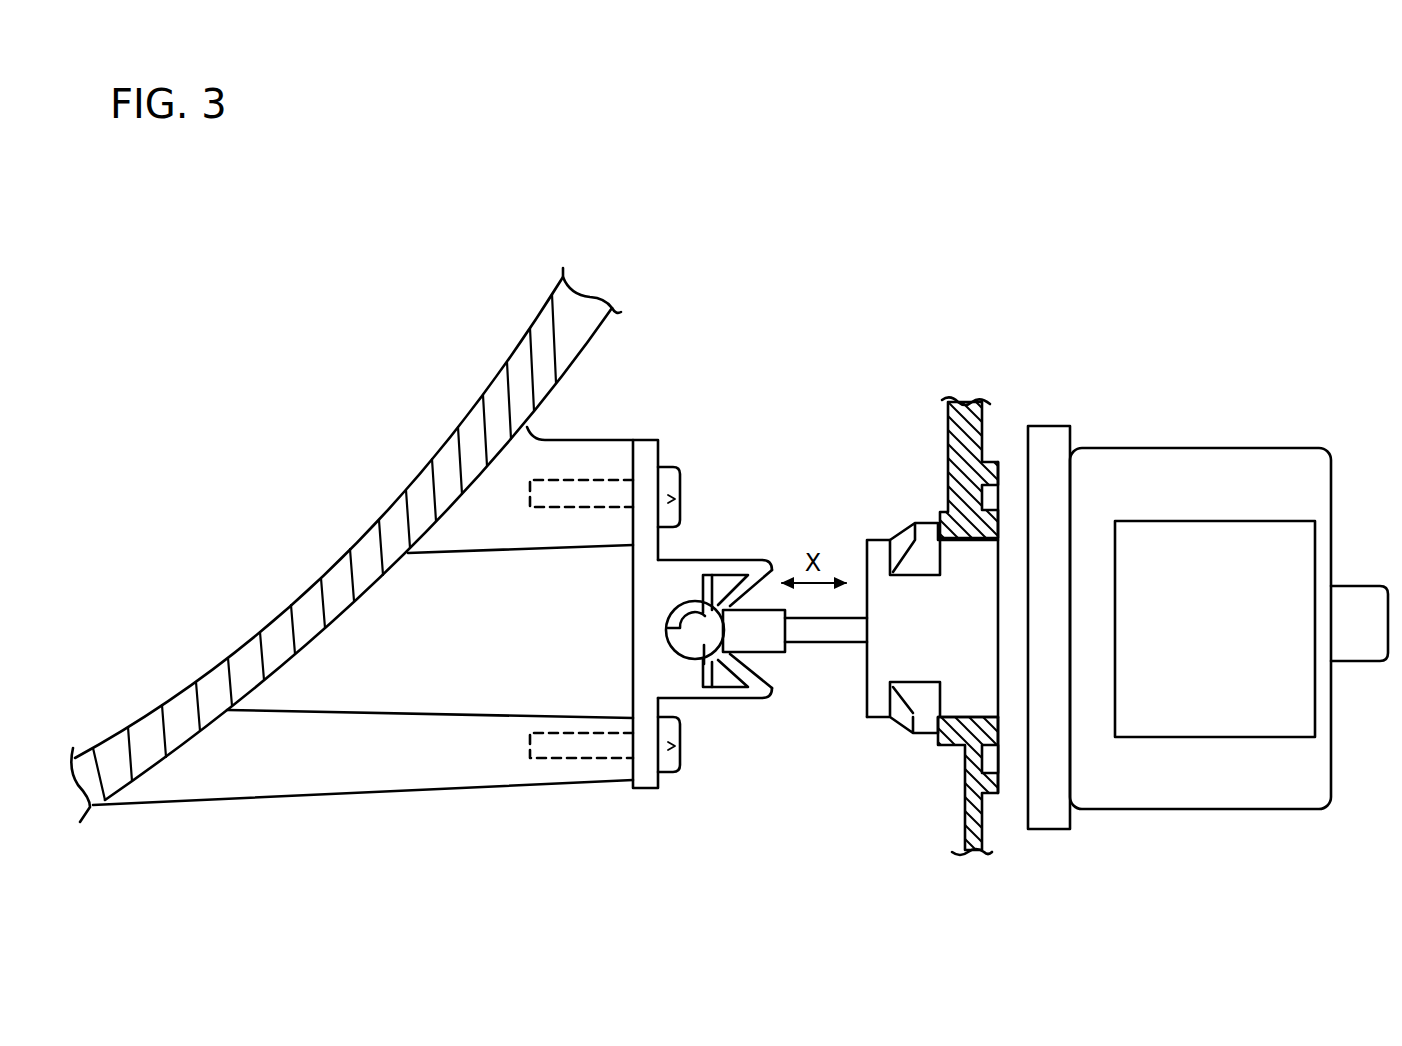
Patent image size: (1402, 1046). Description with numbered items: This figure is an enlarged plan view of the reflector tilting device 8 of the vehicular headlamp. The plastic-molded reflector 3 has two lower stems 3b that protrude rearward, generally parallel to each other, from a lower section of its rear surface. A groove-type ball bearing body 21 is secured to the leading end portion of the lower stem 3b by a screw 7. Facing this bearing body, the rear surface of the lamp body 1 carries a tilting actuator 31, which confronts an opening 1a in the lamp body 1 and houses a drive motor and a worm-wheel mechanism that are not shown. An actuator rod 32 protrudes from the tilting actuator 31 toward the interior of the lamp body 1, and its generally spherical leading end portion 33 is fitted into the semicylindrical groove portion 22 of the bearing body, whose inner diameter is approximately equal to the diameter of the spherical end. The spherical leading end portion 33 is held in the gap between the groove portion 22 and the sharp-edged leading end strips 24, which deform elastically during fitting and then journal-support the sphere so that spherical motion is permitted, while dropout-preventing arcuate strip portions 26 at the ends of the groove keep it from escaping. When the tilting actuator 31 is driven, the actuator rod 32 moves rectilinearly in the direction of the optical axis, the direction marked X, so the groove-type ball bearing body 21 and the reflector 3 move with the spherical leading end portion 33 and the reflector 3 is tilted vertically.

The reflector 3 is at (425, 497).
The lower stem 3b is at (513, 522).
The screw 7 is at (677, 470).
The groove-type ball bearing body 21 is at (704, 545).
The leading end strip 24 is at (750, 665).
The dropout-preventing arcuate strip portion 26 is at (717, 603).
The groove portion 22 is at (672, 660).
The spherical leading end portion 33 is at (705, 645).
The actuator rod 32 is at (838, 645).
The reflector tilting device 8 is at (957, 285).
The lamp body 1 is at (985, 427).
The opening 1a is at (957, 713).
The tilting actuator 31 is at (1184, 433).